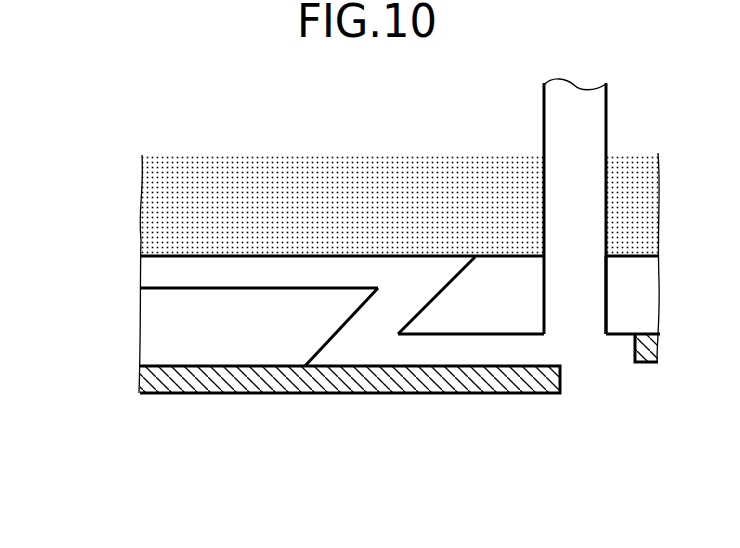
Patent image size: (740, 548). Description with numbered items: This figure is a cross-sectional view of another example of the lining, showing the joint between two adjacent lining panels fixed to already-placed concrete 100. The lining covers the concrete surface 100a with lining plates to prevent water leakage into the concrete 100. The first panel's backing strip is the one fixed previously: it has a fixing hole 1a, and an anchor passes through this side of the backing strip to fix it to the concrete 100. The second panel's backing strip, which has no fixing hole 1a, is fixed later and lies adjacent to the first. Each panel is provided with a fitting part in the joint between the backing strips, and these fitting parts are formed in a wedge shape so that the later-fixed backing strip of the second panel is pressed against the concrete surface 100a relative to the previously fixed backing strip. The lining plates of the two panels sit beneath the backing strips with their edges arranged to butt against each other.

The already-placed concrete 100 is at (153, 177).
The concrete surface 100a is at (158, 258).
The fixing hole 1a is at (607, 303).